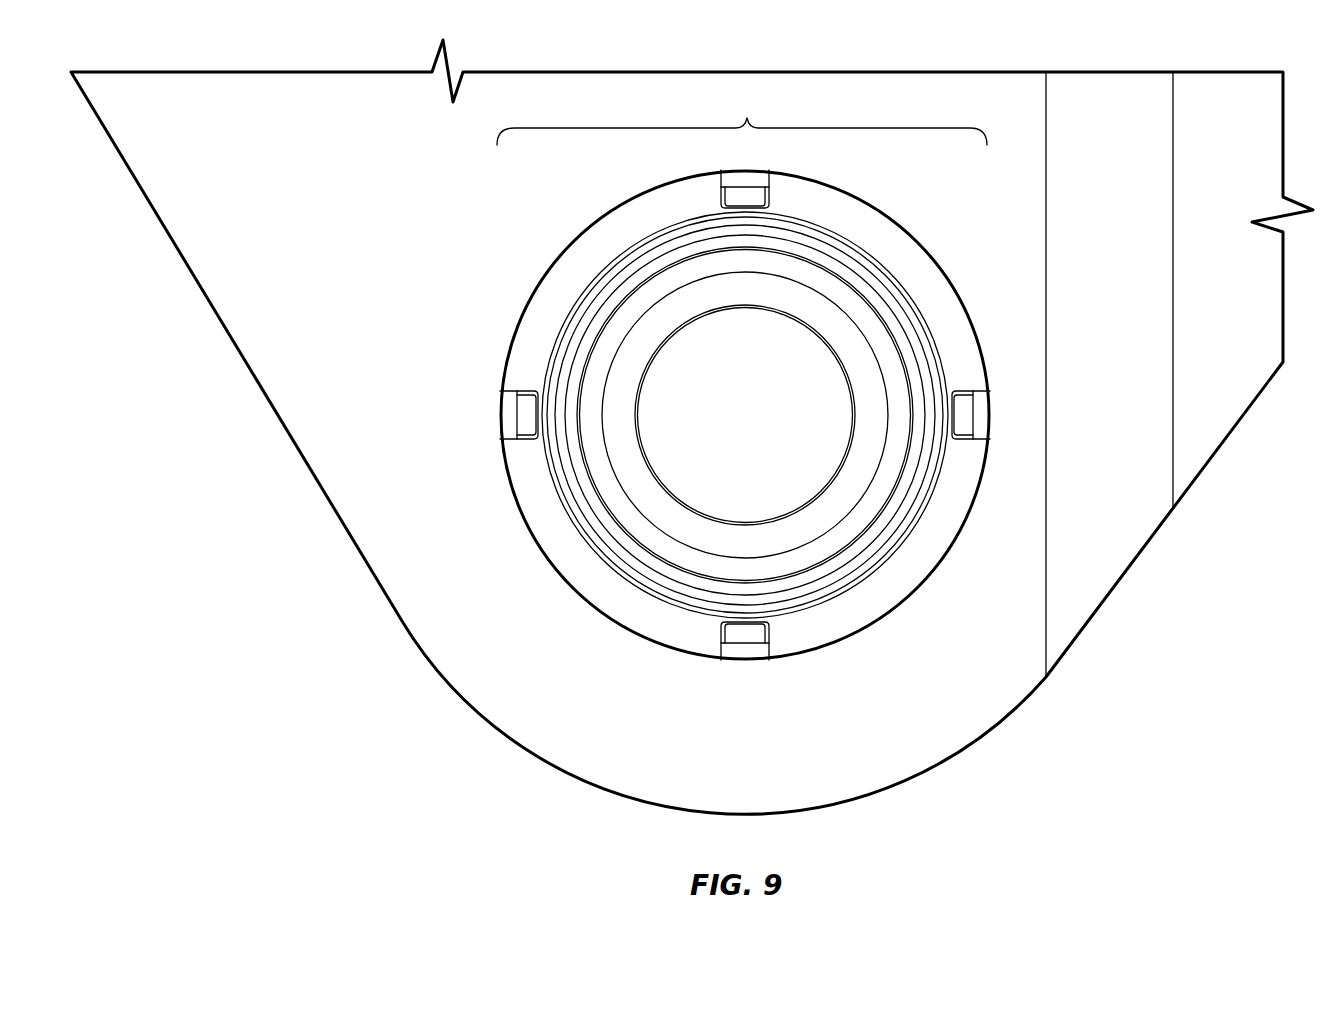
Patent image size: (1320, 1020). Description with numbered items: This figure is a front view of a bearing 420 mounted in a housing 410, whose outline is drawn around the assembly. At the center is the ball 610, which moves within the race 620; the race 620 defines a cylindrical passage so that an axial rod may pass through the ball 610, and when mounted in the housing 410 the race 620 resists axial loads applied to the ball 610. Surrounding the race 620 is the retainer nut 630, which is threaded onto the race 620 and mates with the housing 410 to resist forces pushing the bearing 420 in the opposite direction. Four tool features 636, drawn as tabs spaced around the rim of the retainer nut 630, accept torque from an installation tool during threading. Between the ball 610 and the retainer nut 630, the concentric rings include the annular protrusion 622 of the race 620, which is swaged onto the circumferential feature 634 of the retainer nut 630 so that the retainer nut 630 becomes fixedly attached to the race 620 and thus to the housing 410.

The housing 410 is at (973, 694).
The bearing 420 is at (747, 127).
The ball 610 is at (830, 320).
The race 620 is at (647, 260).
The annular protrusion 622 is at (572, 323).
The retainer nut 630 is at (905, 572).
The circumferential feature 634 is at (933, 347).
The tool features 636 is at (967, 412).